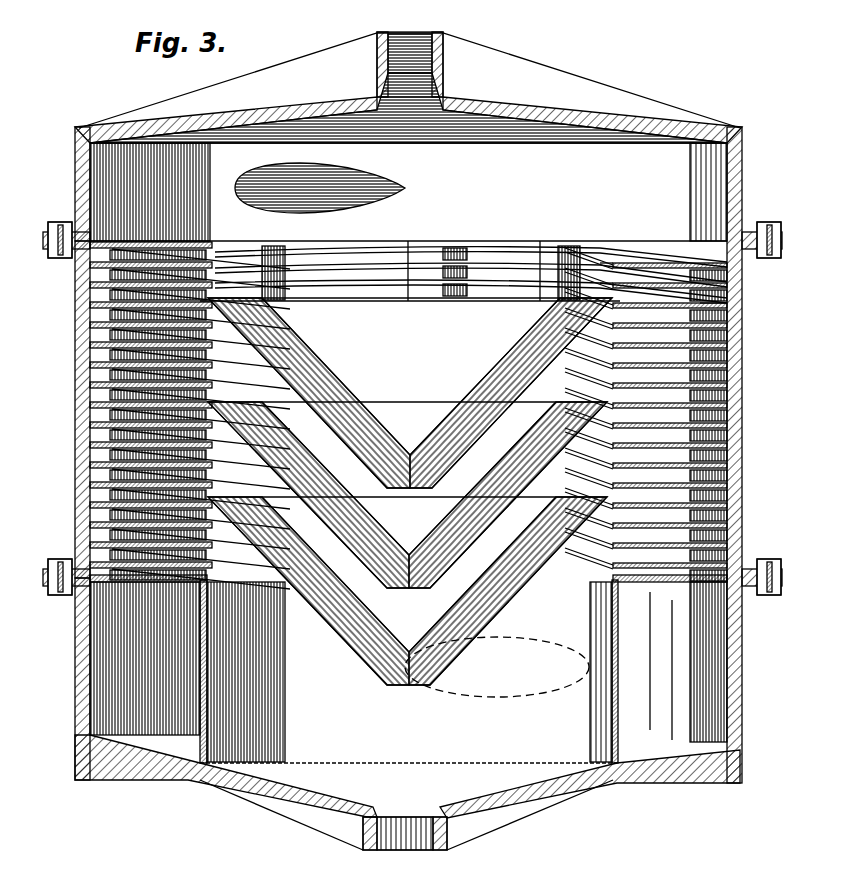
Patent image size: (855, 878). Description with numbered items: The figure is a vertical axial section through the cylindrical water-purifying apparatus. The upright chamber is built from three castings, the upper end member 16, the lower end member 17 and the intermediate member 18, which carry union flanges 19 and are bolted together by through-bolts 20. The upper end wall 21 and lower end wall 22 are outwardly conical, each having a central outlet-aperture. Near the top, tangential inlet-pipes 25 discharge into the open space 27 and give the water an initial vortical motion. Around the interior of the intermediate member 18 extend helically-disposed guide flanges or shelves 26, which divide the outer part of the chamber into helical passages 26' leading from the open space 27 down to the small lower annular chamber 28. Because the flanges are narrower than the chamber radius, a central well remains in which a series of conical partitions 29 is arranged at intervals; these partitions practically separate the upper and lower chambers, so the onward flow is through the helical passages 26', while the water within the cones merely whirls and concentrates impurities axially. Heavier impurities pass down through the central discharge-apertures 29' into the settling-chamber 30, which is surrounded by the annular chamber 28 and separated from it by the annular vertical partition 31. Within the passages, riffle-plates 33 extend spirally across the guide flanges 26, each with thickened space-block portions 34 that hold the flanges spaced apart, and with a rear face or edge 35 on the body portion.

The upper end member 16 is at (75, 189).
The lower end member 17 is at (75, 699).
The intermediate member 18 is at (75, 446).
The union flanges 19 is at (45, 243).
The through-bolts 20 is at (55, 229).
The upper end wall 21 is at (457, 137).
The lower end wall 22 is at (522, 803).
The inlet-pipes 25 is at (320, 188).
The guide flanges or shelves 26 is at (619, 254).
The helical passages 26' is at (737, 289).
The open space 27 is at (408, 192).
The lower annular chamber 28 is at (670, 658).
The conical partitions 29 is at (410, 443).
The central discharge-apertures 29' is at (407, 588).
The settling-chamber 30 is at (354, 669).
The annular vertical partition 31 is at (608, 623).
The riffle-plates 33 is at (108, 398).
The space-block portion 34 is at (100, 270).
The rear face or edge 35 is at (100, 331).